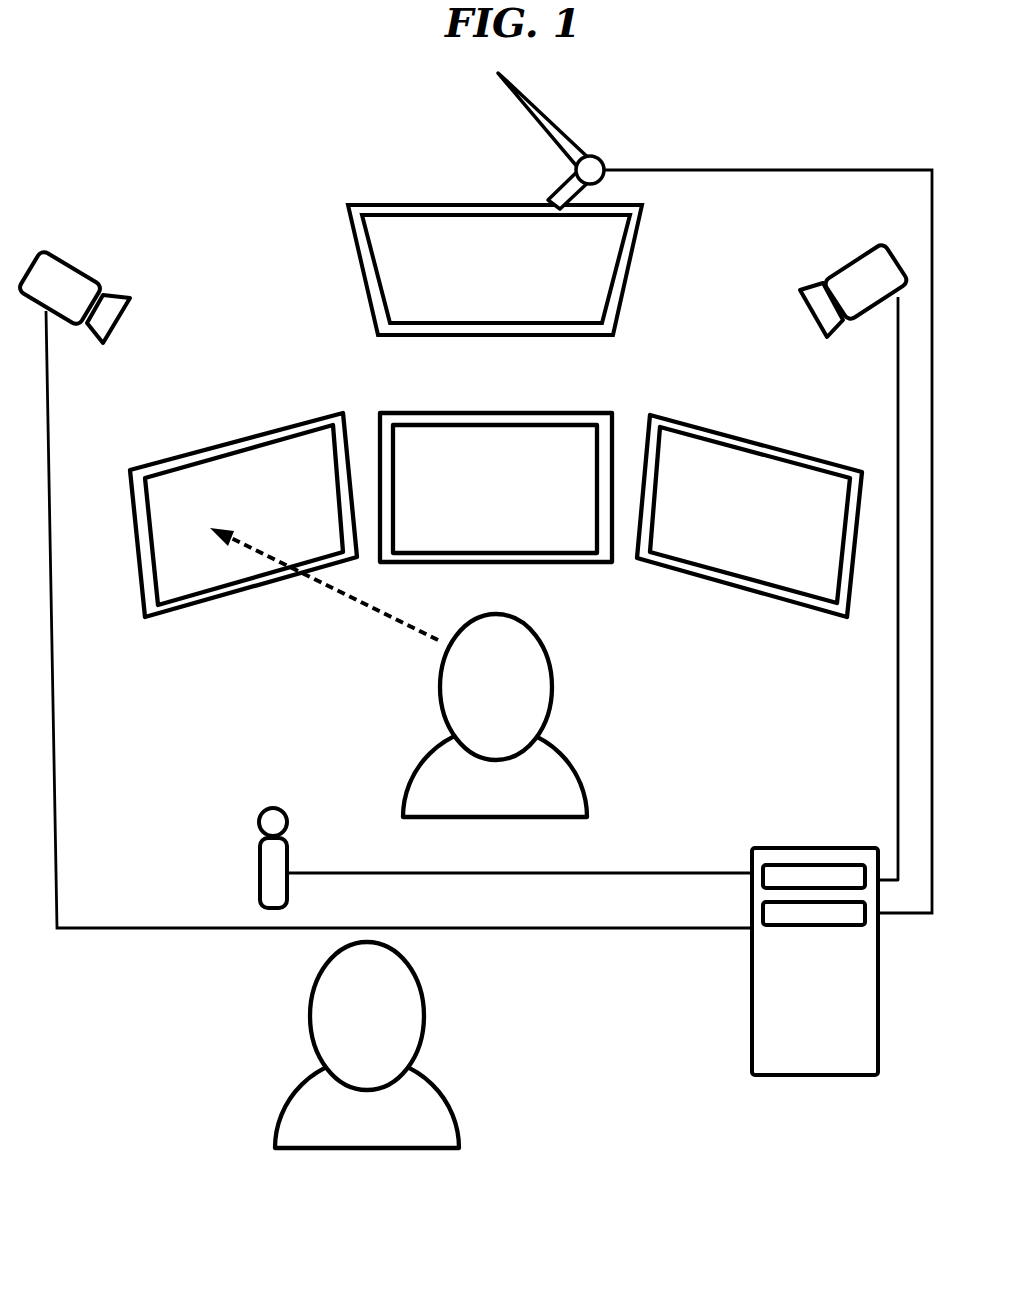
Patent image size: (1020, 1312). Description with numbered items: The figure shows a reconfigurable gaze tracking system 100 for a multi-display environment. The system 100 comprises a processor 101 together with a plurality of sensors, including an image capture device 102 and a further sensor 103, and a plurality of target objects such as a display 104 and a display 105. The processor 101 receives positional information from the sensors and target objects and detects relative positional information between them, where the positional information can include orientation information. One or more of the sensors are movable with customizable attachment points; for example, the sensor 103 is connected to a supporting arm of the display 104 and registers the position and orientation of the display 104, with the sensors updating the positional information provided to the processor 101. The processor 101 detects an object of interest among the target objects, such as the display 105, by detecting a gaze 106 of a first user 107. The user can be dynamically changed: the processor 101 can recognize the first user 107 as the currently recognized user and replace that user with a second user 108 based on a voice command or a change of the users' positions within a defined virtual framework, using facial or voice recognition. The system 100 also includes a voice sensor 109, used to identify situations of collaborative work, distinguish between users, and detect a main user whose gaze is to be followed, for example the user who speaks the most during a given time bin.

The system 100 is at (214, 220).
The processor 101 is at (786, 847).
The image capture device 102 is at (857, 258).
The sensor 103 is at (607, 168).
The display 104 is at (632, 240).
The display 105 is at (177, 610).
The gaze 106 is at (360, 602).
The first user 107 is at (575, 782).
The second user 108 is at (447, 1112).
The voice sensor 109 is at (262, 853).